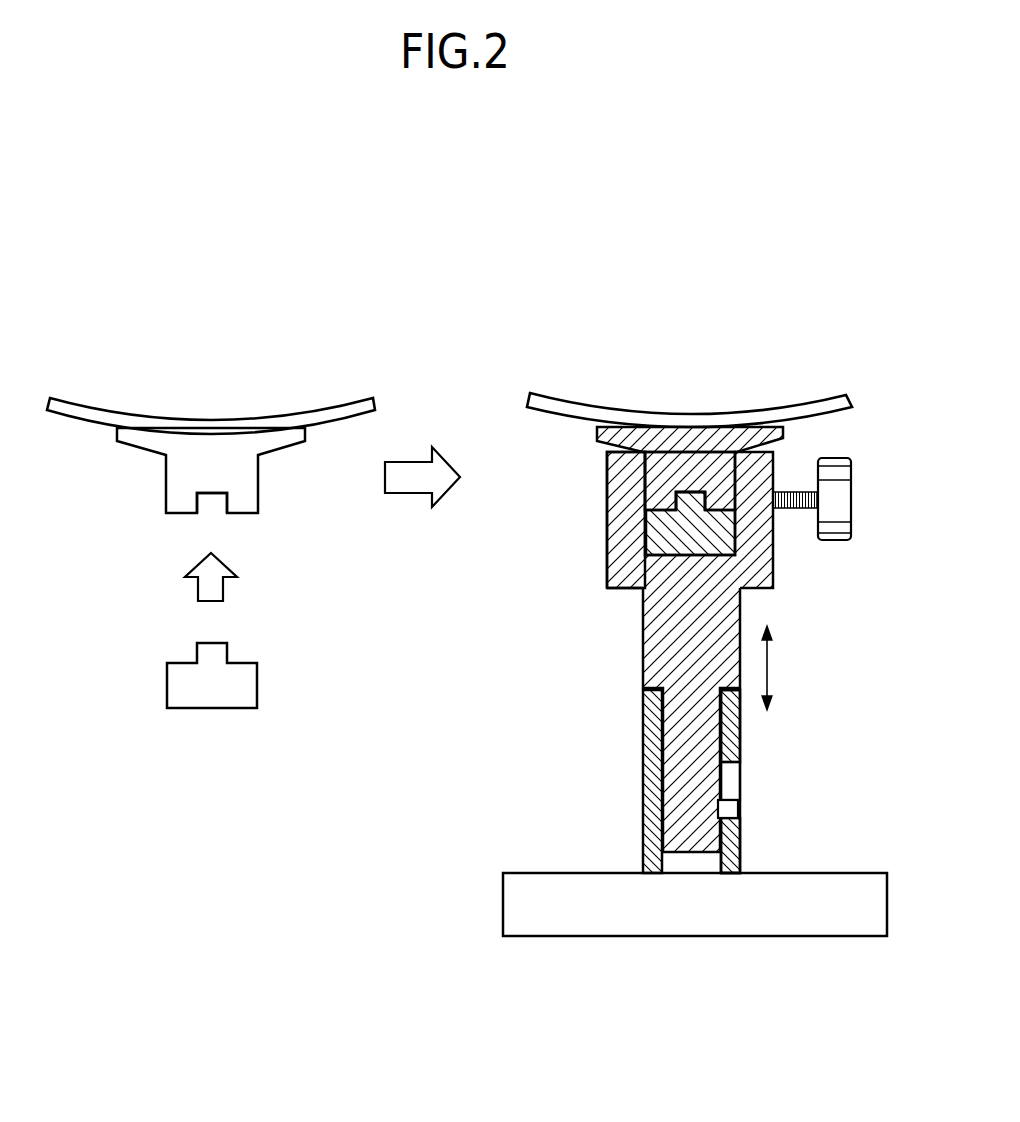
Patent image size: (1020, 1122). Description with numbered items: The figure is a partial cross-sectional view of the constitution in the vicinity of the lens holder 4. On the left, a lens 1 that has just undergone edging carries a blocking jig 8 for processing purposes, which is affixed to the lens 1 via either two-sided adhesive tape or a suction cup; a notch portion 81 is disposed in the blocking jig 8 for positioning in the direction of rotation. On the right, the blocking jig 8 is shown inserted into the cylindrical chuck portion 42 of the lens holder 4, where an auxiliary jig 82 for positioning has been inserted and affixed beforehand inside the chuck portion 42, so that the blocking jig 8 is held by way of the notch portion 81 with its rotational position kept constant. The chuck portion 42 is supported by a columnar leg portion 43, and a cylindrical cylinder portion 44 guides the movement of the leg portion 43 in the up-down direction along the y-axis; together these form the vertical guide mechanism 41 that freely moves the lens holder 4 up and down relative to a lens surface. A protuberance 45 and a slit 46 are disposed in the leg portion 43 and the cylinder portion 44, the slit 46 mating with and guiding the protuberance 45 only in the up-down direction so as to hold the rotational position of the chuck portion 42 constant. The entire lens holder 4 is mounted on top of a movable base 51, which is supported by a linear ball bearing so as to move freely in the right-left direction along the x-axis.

The lens 1 is at (357, 398).
The lens holder 4 is at (777, 462).
The blocking jig 8 is at (167, 467).
The notch portion 81 is at (212, 507).
The auxiliary jig 82 is at (258, 680).
The vertical guide mechanism 41 is at (758, 727).
The chuck portion 42 is at (607, 468).
The leg portion 43 is at (685, 725).
The cylinder portion 44 is at (650, 800).
The protuberance 45 is at (735, 808).
The slit 46 is at (735, 773).
The movable base 51 is at (503, 890).